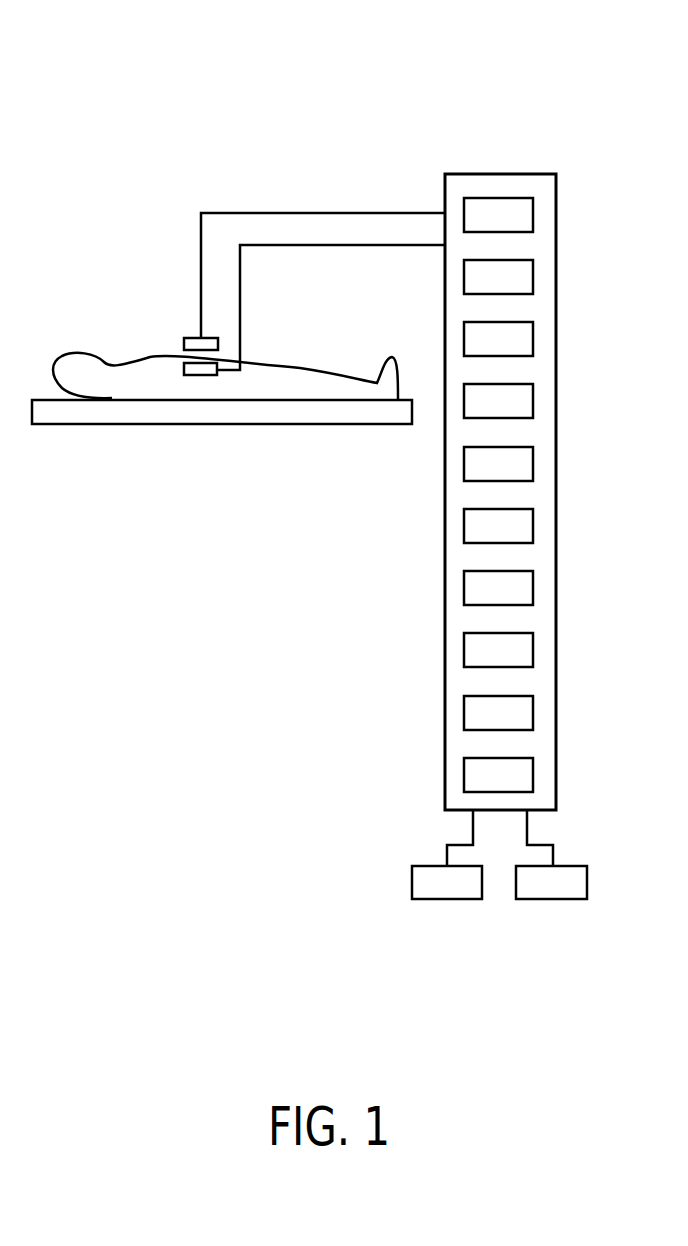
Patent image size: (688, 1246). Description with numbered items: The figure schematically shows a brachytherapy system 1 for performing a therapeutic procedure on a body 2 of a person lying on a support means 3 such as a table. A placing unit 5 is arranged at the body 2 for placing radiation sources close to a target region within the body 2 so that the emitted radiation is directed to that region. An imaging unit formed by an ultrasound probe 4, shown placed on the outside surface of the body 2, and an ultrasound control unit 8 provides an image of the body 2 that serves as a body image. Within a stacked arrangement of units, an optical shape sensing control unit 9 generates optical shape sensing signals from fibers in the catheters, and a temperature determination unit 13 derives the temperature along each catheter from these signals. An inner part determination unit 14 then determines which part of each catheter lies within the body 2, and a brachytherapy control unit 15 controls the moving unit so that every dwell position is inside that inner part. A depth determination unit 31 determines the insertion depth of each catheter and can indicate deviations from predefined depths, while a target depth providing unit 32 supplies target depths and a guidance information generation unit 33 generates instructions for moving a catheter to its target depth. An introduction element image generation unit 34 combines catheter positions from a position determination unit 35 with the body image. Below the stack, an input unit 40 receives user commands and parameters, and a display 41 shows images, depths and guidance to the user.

The brachytherapy system 1 is at (151, 88).
The body 2 is at (148, 356).
The support means 3 is at (385, 425).
The ultrasound probe 4 is at (193, 337).
The placing unit 5 is at (202, 376).
The ultrasound control unit 8 is at (533, 215).
The optical shape sensing control unit 9 is at (533, 277).
The temperature determination unit 13 is at (533, 339).
The inner part determination unit 14 is at (533, 401).
The brachytherapy control unit 15 is at (533, 464).
The depth determination unit 31 is at (533, 526).
The target depth providing unit 32 is at (533, 588).
The guidance information generation unit 33 is at (533, 650).
The introduction element image generation unit 34 is at (533, 713).
The position determination unit 35 is at (533, 775).
The input unit 40 is at (442, 900).
The display 41 is at (556, 900).